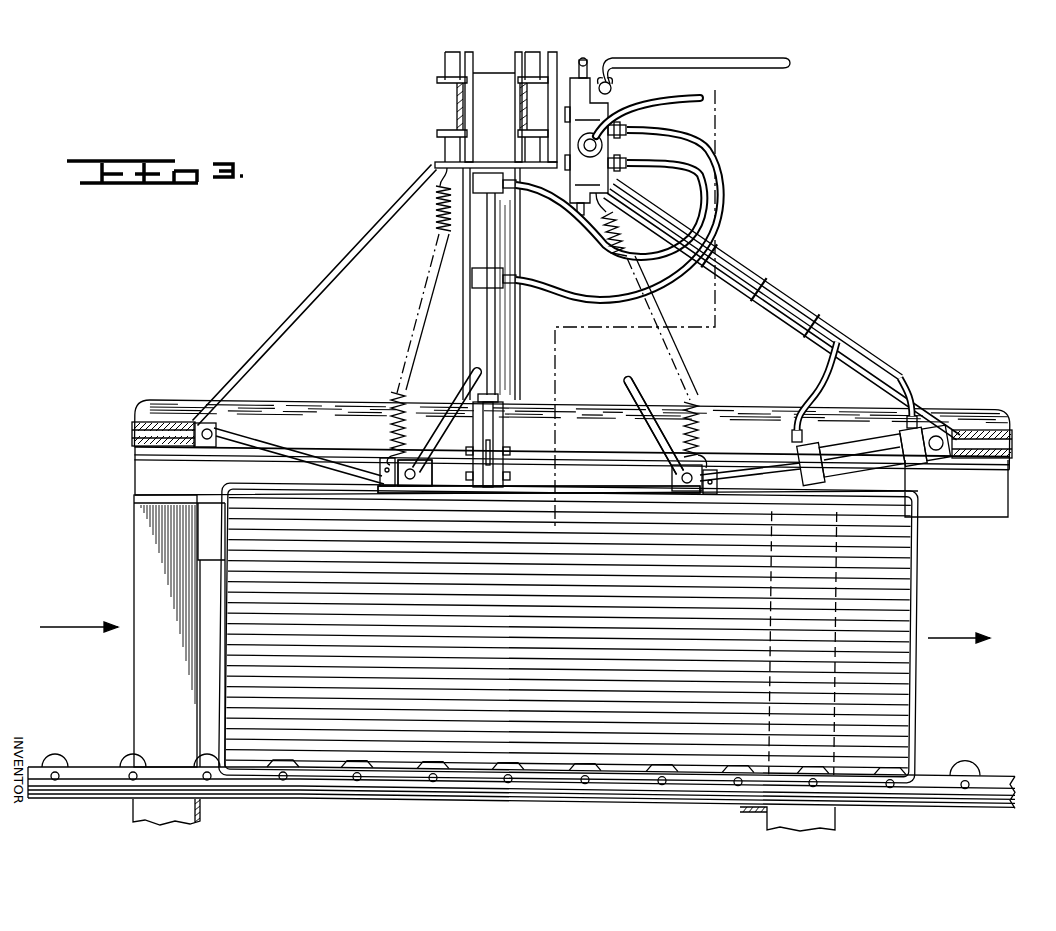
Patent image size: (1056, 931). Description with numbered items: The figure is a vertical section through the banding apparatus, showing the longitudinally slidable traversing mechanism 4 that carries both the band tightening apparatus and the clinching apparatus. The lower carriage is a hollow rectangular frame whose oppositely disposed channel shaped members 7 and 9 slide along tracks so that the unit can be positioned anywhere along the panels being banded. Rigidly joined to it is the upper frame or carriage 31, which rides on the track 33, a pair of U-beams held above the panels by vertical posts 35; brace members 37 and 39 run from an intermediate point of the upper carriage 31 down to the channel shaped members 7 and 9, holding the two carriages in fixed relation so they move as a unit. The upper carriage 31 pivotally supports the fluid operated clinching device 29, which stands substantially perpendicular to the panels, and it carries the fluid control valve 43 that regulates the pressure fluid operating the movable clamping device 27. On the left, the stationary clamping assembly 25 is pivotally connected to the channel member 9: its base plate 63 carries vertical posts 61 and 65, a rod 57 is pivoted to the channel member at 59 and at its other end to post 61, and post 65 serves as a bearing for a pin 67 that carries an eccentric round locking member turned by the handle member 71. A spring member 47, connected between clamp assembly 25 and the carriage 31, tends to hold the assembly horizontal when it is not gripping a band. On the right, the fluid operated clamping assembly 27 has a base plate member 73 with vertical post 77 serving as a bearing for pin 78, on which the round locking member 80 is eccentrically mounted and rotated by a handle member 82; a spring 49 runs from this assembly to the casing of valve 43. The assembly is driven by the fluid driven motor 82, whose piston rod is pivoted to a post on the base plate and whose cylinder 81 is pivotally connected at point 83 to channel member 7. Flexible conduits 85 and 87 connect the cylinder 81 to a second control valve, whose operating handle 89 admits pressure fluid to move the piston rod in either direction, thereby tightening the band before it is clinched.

The traversing mechanism 4 is at (535, 523).
The channel shaped member 7 is at (1012, 444).
The channel shaped member 9 is at (133, 432).
The stationary clamping assembly 25 is at (331, 449).
The fluid operated movable clamping assembly 27 is at (773, 455).
The fluid operated clinching device 29 is at (507, 440).
The upper frame or carriage 31 is at (497, 86).
The track 33 is at (452, 98).
The vertical posts 35 is at (522, 248).
The brace member 37 is at (773, 311).
The brace member 39 is at (296, 325).
The fluid control valve 43 is at (610, 106).
The spring member 47 is at (392, 398).
The spring 49 is at (694, 400).
The rod 57 is at (262, 438).
The pivot point 59 is at (213, 428).
The vertical post 61 is at (368, 458).
The base plate 63 is at (380, 493).
The vertical post 65 is at (433, 458).
The pin 67 is at (410, 465).
The handle member 71 is at (452, 392).
The base plate member 73 is at (660, 484).
The vertical post 77 is at (686, 465).
The pin 78 is at (670, 497).
The round locking member 80 is at (665, 462).
The cylinder 81 is at (850, 452).
The fluid driven motor 82 is at (850, 440).
The pivot point 83 is at (937, 455).
The flexible conduit 85 is at (818, 386).
The flexible conduit 87 is at (907, 386).
The operating handle 89 is at (776, 68).